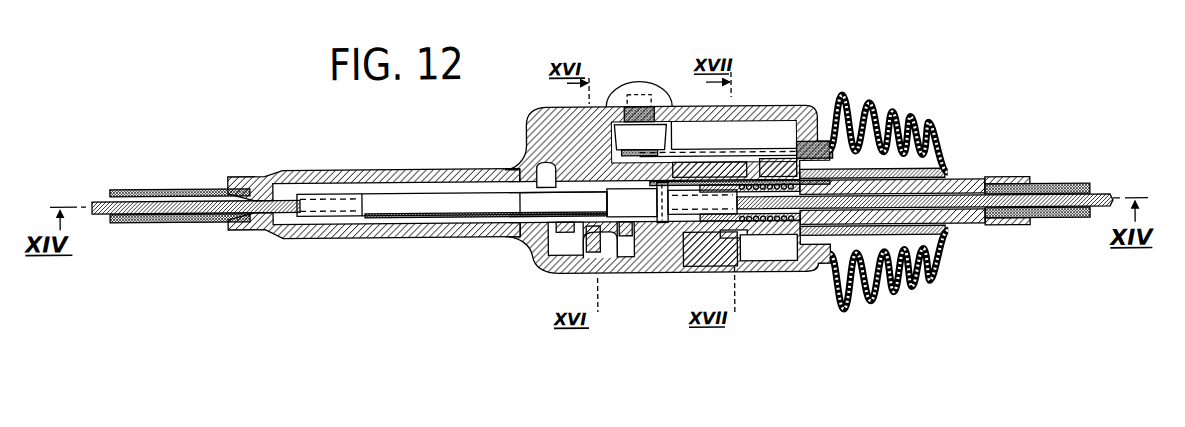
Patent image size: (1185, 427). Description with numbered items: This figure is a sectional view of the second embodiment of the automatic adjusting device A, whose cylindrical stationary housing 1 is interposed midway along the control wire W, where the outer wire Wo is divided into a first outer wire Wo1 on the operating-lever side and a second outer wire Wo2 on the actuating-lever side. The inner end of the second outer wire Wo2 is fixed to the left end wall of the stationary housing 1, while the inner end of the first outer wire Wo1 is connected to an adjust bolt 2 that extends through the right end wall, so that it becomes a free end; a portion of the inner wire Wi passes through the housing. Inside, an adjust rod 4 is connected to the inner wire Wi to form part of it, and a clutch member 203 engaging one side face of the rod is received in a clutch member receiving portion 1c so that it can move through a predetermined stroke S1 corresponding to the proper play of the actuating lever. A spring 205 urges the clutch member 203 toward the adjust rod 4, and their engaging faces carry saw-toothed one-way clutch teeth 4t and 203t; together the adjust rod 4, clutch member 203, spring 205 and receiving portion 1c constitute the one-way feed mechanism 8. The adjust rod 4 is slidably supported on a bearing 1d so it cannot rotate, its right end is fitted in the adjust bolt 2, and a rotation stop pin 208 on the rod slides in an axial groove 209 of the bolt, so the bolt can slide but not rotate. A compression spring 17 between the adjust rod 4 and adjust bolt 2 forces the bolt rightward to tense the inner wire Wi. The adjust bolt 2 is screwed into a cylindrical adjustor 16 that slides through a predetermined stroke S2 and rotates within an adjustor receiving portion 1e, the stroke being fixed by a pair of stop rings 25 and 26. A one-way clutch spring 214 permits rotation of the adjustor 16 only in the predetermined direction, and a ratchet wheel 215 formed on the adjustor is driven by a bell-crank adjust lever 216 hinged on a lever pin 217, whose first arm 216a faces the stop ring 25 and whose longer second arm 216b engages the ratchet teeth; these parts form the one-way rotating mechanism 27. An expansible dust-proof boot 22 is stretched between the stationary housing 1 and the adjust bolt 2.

The stationary housing 1 is at (527, 126).
The clutch member receiving portion 1c is at (650, 240).
The bearing 1d is at (546, 175).
The adjustor receiving portion 1e is at (732, 292).
The adjust bolt 2 is at (955, 176).
The adjust rod 4 is at (440, 192).
The one-way clutch teeth 4t is at (442, 216).
The one-way feed mechanism 8 is at (543, 234).
The adjustor 16 is at (838, 171).
The compression spring 17 is at (768, 247).
The dust-proof boot 22 is at (929, 136).
The stop ring 25 is at (678, 264).
The stop ring 26 is at (758, 161).
The one-way rotating mechanism 27 is at (769, 132).
The clutch member 203 is at (596, 292).
The one-way clutch teeth 203t is at (545, 200).
The spring 205 is at (626, 258).
The rotation stop pin 208 is at (617, 251).
The axial groove 209 is at (672, 202).
The one-way clutch spring 214 is at (745, 160).
The ratchet wheel 215 is at (790, 266).
The adjust lever 216 is at (680, 148).
The first arm 216a is at (640, 139).
The second arm 216b is at (712, 158).
The lever pin 217 is at (632, 100).
The automatic adjusting device A is at (796, 106).
The predetermined stroke S1 is at (612, 182).
The predetermined stroke S2 is at (741, 266).
The control wire W is at (1131, 146).
The outer wire Wo is at (1086, 186).
The inner wire Wi is at (1097, 199).
The first outer wire Wo1 is at (1057, 187).
The second outer wire Wo2 is at (178, 186).